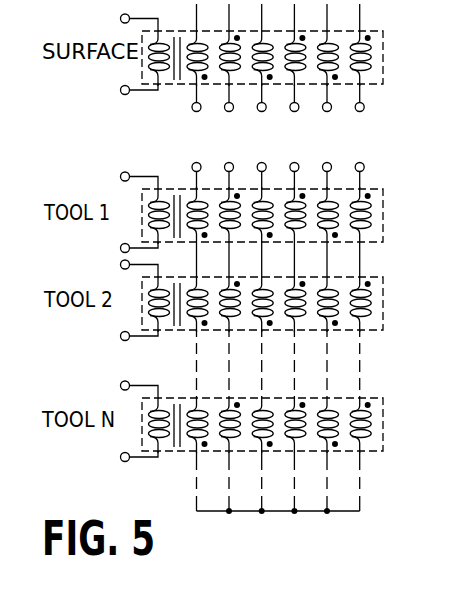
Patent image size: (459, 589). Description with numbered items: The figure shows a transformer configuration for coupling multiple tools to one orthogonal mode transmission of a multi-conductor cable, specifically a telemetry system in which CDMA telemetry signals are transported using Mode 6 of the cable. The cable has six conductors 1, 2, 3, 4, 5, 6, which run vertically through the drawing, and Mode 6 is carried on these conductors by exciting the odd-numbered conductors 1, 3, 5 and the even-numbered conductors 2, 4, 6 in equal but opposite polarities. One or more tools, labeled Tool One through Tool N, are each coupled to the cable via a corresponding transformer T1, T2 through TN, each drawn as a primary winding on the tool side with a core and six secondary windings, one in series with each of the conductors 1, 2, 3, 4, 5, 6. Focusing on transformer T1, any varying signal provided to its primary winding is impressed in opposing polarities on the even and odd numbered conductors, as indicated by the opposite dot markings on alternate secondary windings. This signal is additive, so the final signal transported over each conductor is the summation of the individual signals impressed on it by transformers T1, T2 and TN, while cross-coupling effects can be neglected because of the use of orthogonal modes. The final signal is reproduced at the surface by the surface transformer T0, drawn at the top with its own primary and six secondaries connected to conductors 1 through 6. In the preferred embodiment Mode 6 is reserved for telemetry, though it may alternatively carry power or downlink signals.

The conductor 1 is at (196, 136).
The conductor 2 is at (229, 136).
The conductor 3 is at (261, 136).
The conductor 4 is at (294, 136).
The conductor 5 is at (327, 136).
The conductor 6 is at (359, 136).
The surface transformer T0 is at (383, 64).
The tool transformer T1 is at (383, 222).
The tool transformer T2 is at (383, 310).
The tool transformer TN is at (383, 431).